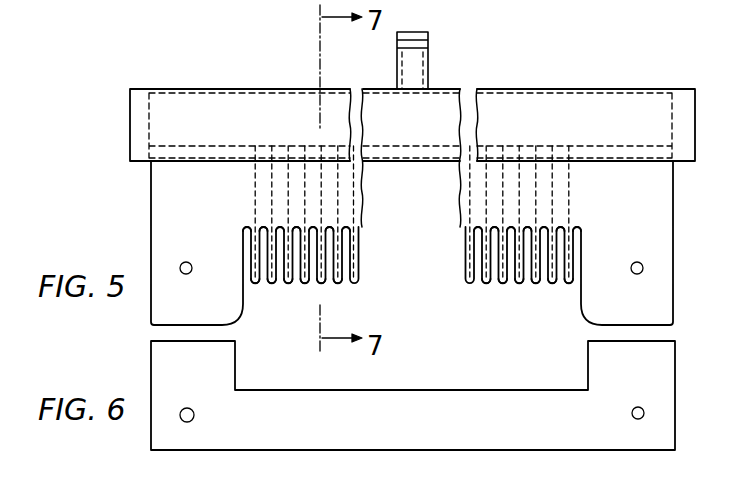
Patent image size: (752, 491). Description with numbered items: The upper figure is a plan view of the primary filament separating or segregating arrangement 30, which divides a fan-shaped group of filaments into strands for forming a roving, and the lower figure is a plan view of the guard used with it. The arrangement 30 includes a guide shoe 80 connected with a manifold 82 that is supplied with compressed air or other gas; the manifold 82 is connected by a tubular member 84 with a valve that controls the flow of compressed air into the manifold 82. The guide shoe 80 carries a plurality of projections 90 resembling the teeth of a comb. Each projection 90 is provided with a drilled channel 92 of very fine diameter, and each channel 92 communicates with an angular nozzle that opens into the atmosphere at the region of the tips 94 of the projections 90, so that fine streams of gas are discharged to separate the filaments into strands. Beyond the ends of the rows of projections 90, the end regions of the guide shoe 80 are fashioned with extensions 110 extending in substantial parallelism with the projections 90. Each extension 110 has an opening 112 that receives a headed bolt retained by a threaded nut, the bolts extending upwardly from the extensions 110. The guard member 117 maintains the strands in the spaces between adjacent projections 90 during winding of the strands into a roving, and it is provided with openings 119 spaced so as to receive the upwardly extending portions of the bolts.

In FIG. 5, the filament separating arrangement 30 is at (194, 86).
In FIG. 5, the guide shoe 80 is at (363, 195).
In FIG. 5, the manifold 82 is at (302, 118).
In FIG. 5, the tubular member 84 is at (428, 72).
In FIG. 5, the projections 90 is at (275, 250).
In FIG. 5, the channel 92 is at (280, 226).
In FIG. 5, the tips 94 is at (255, 283).
In FIG. 5, the extensions 110 is at (151, 313).
In FIG. 5, the opening 112 is at (180, 263).
In FIG. 6, the guard member 117 is at (480, 448).
In FIG. 6, the openings 119 is at (217, 378).